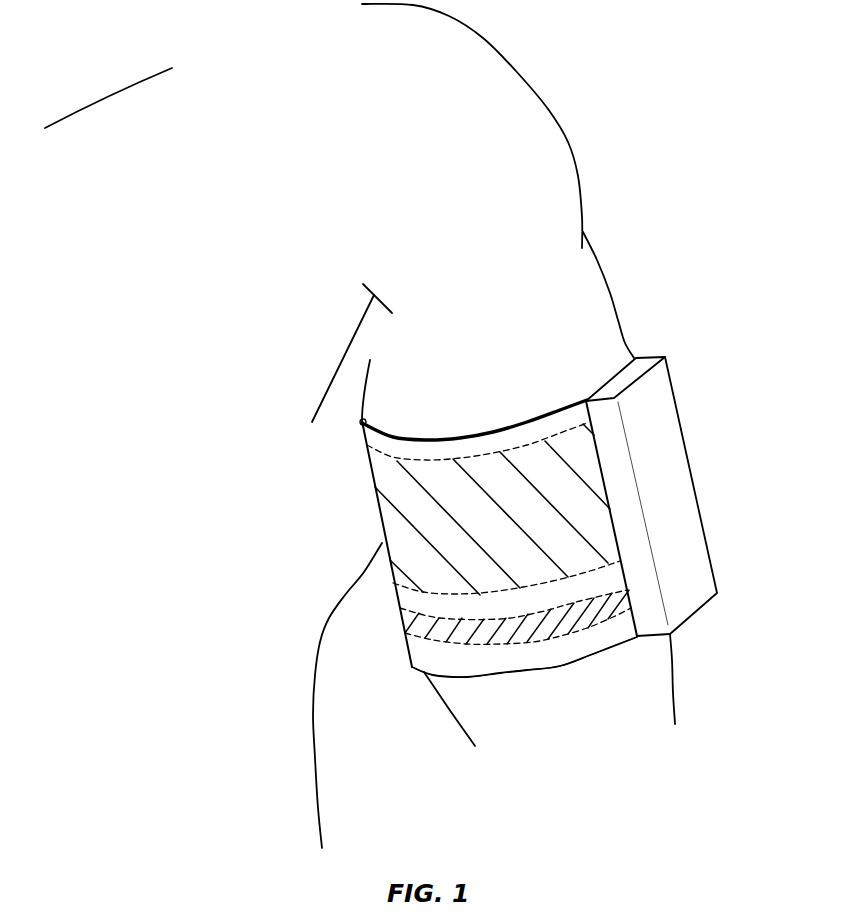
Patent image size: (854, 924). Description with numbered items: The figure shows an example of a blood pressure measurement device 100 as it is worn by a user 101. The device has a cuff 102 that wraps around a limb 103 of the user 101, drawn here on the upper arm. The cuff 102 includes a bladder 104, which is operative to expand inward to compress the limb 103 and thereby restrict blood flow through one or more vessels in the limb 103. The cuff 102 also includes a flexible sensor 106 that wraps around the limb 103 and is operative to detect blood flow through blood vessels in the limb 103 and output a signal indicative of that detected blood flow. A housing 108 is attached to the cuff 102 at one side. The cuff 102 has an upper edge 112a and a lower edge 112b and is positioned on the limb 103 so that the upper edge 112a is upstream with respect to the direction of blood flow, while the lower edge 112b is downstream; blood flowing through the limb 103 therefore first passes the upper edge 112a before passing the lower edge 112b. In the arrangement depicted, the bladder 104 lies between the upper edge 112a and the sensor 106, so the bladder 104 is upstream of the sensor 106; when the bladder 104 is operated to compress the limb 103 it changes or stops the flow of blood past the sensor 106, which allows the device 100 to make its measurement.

The blood pressure measurement device 100 is at (502, 560).
The user 101 is at (660, 239).
The cuff 102 is at (406, 601).
The limb 103 is at (617, 306).
The bladder 104 is at (583, 461).
The flexible sensor 106 is at (575, 622).
The housing 108 is at (676, 402).
The upper edge 112a is at (413, 432).
The lower edge 112b is at (495, 678).